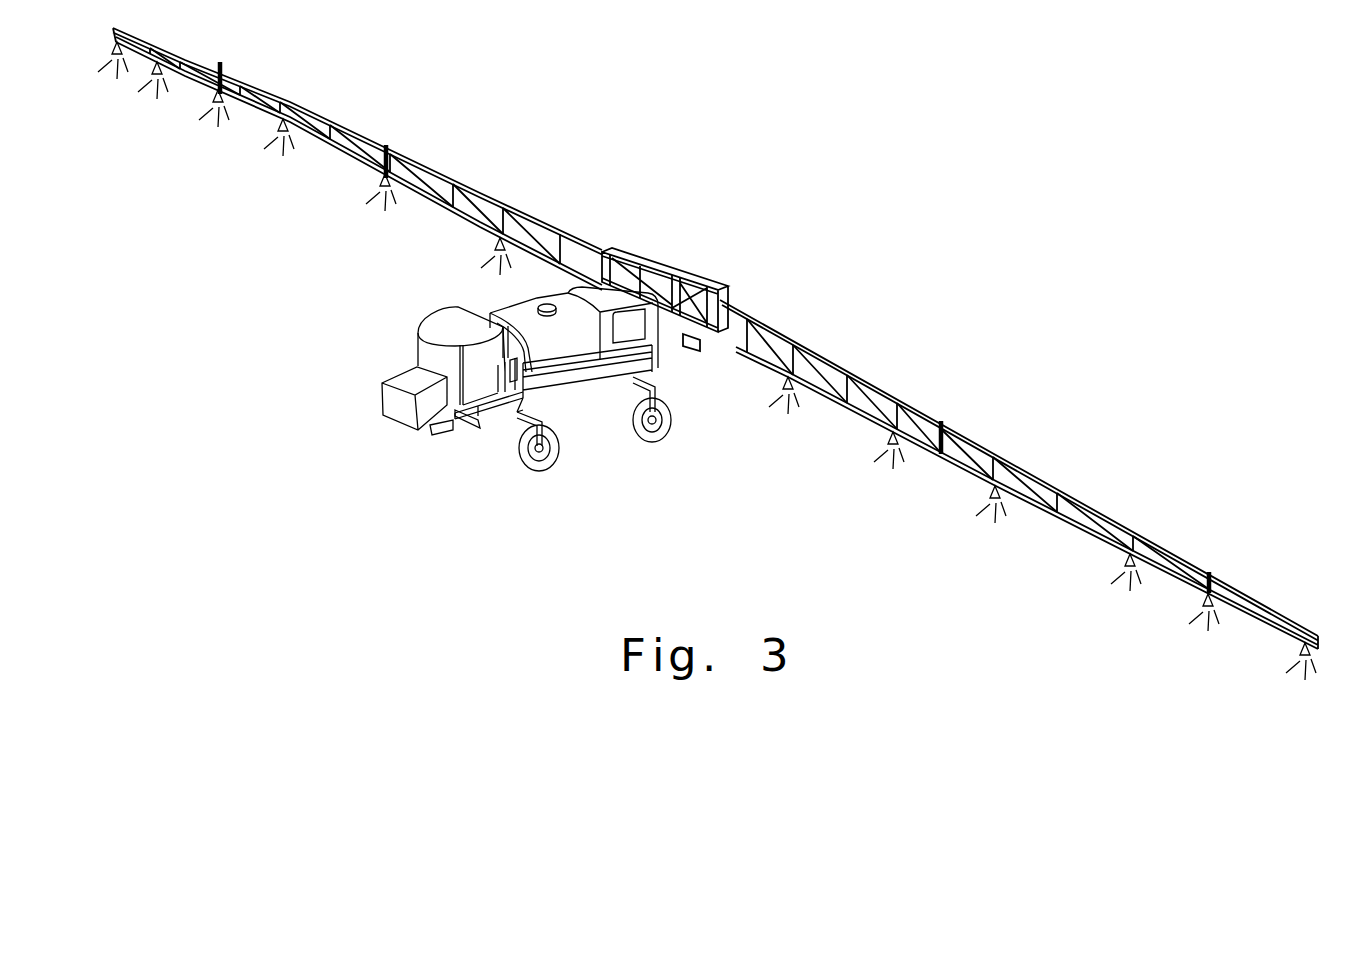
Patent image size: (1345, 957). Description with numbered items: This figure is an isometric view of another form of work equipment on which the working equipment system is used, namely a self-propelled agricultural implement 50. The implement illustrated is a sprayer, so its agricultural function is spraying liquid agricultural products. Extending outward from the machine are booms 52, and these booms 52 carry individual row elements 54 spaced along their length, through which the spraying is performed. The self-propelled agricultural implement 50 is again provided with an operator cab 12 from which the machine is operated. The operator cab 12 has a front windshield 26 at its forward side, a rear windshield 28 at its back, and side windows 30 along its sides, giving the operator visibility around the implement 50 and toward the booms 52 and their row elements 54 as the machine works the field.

The operator cab 12 is at (507, 380).
The front windshield 26 is at (430, 358).
The rear windshield 28 is at (483, 312).
The side windows 30 is at (478, 380).
The self-propelled agricultural implement 50 is at (513, 304).
The booms 52 is at (466, 183).
The individual row elements 54 is at (277, 153).